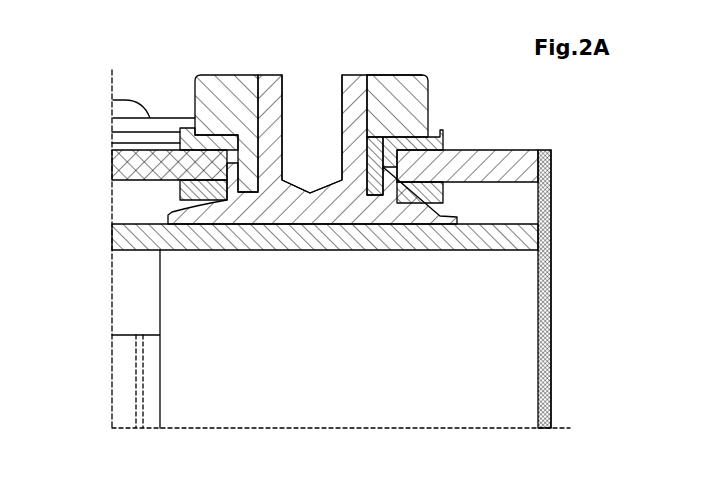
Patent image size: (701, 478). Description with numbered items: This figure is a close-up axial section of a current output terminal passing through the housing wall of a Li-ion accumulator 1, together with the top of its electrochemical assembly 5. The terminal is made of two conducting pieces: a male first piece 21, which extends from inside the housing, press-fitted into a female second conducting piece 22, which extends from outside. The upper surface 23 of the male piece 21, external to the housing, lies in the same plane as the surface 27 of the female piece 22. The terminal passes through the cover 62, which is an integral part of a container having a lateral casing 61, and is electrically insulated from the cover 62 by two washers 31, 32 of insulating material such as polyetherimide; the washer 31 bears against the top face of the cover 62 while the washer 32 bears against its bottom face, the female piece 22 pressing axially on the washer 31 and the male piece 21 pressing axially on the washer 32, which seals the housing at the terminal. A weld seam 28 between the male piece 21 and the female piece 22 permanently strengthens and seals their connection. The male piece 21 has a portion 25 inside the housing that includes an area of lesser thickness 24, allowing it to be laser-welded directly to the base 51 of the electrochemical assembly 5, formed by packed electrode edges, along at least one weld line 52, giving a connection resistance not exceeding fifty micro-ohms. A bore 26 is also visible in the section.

The Li-ion accumulator 1 is at (135, 59).
The male first piece 21 is at (270, 100).
The female second conducting piece 22 is at (432, 97).
The upper surface 23 is at (268, 75).
The area of lesser thickness 24 is at (170, 215).
The portion 25 is at (130, 165).
The bore 26 is at (320, 103).
The surface 27 is at (408, 72).
The weld seam 28 is at (370, 110).
The washer 31 is at (443, 138).
The washer 32 is at (443, 190).
The electrochemical assembly 5 is at (513, 333).
The base 51 is at (258, 238).
The weld line 52 is at (187, 250).
The lateral casing 61 is at (551, 255).
The cover 62 is at (512, 165).